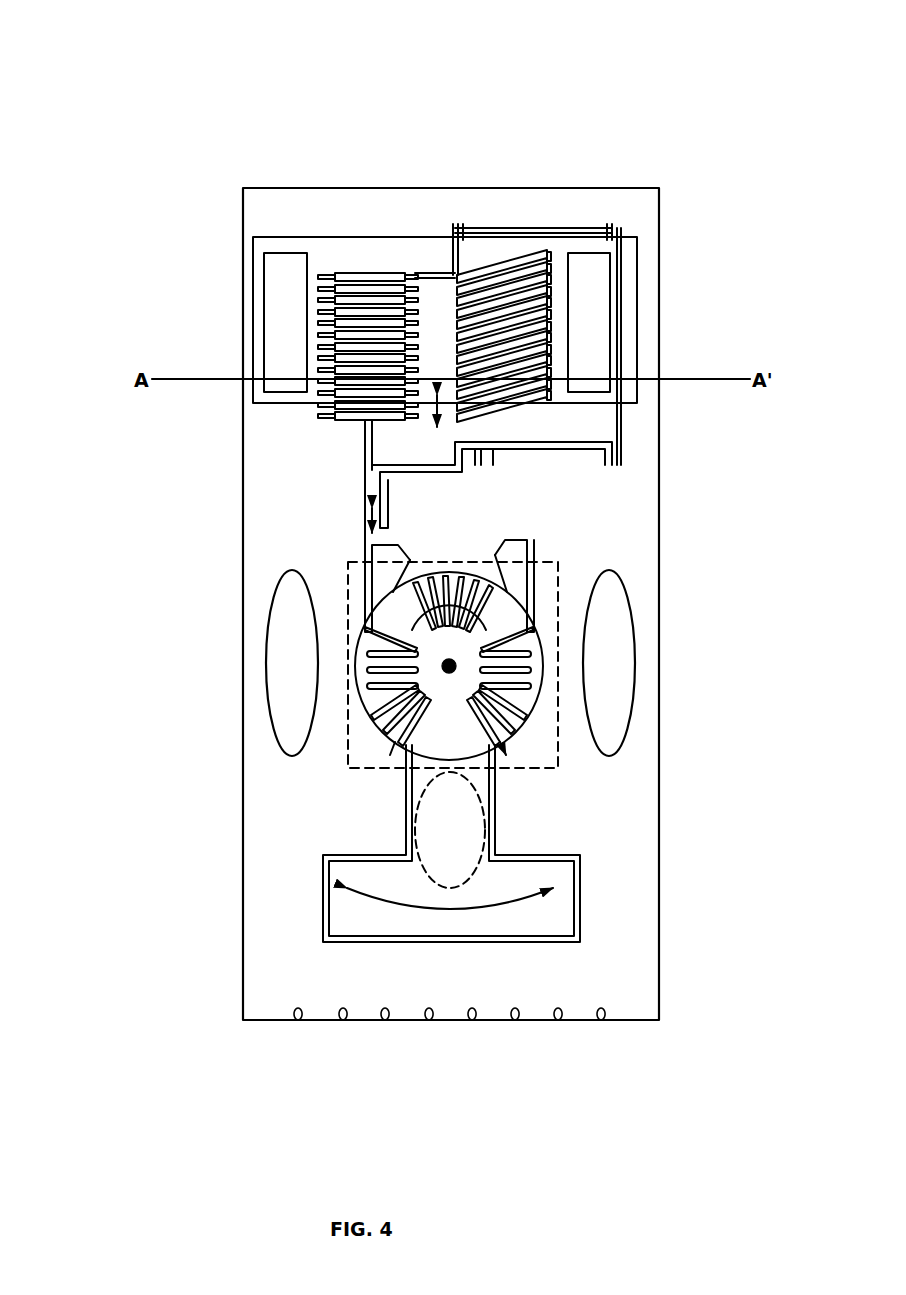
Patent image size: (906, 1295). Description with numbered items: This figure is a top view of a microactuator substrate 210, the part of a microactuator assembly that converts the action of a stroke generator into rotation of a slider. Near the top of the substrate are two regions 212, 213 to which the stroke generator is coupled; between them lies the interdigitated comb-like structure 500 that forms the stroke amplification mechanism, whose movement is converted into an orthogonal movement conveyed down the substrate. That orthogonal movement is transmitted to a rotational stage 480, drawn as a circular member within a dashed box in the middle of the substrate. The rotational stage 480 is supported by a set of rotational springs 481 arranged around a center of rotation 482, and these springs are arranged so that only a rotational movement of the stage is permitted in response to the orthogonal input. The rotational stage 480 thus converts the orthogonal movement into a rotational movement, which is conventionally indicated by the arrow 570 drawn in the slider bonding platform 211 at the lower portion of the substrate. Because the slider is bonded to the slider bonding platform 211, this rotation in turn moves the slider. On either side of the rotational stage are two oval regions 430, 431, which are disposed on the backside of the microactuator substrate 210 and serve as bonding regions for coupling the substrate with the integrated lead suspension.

The microactuator substrate 210 is at (66, 35).
The slider bonding platform 211 is at (462, 805).
The region 212 is at (283, 298).
The region 213 is at (595, 365).
The oval region 430 is at (256, 647).
The oval region 431 is at (637, 668).
The rotational stage 480 is at (333, 748).
The rotational springs 481 is at (533, 648).
The center of rotation 482 is at (464, 680).
The comb drive actuator 500 is at (370, 513).
The arrow 570 is at (452, 907).